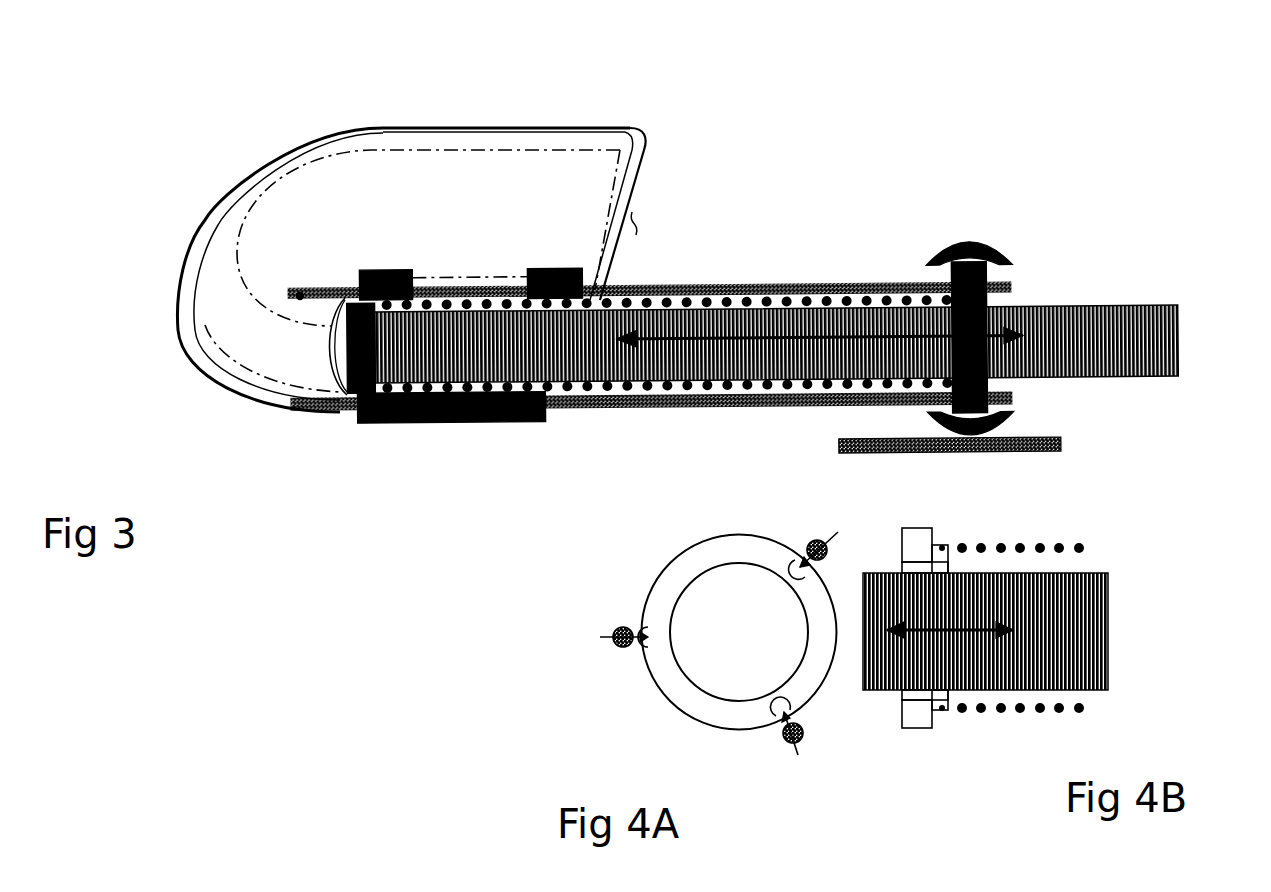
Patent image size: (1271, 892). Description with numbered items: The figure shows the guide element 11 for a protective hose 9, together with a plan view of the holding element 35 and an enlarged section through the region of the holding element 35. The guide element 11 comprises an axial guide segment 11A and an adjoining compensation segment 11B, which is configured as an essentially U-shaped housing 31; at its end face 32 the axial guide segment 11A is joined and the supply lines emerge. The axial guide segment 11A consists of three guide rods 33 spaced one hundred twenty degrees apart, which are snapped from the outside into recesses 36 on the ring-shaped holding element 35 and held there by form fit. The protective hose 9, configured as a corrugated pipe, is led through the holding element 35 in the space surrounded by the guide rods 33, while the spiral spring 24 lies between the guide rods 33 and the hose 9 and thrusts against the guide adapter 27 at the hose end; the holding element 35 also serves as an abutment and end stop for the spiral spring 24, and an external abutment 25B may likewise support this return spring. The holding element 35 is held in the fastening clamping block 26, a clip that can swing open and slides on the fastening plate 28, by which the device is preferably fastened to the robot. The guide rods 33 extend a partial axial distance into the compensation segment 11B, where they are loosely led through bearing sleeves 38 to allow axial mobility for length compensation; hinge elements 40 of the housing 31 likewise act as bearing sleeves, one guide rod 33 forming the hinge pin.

In FIG. 3, the protective hose 9 is at (1082, 350).
In FIG. 4B, the protective hose 9 is at (1082, 640).
In FIG. 3, the guide element 11 is at (871, 124).
In FIG. 3, the axial guide segment 11A is at (863, 274).
In FIG. 3, the compensation segment 11B is at (471, 108).
In FIG. 3, the spiral spring 24 is at (757, 300).
In FIG. 4B, the spiral spring 24 is at (1022, 547).
In FIG. 4B, the external abutment 25B is at (937, 707).
In FIG. 3, the fastening clamping block 26 is at (998, 243).
In FIG. 3, the guide adapter 27 is at (340, 397).
In FIG. 3, the fastening plate 28 is at (838, 446).
In FIG. 3, the housing 31 is at (497, 195).
In FIG. 3, the end face 32 is at (632, 212).
In FIG. 3, the guide rods 33 is at (330, 398).
In FIG. 4A, the guide rods 33 is at (620, 645).
In FIG. 3, the holding element 35 is at (985, 305).
In FIG. 4A, the holding element 35 is at (680, 575).
In FIG. 4B, the holding element 35 is at (915, 542).
In FIG. 4A, the recesses 36 is at (655, 642).
In FIG. 3, the bearing sleeves 38 is at (583, 272).
In FIG. 3, the hinge elements 40 is at (427, 425).